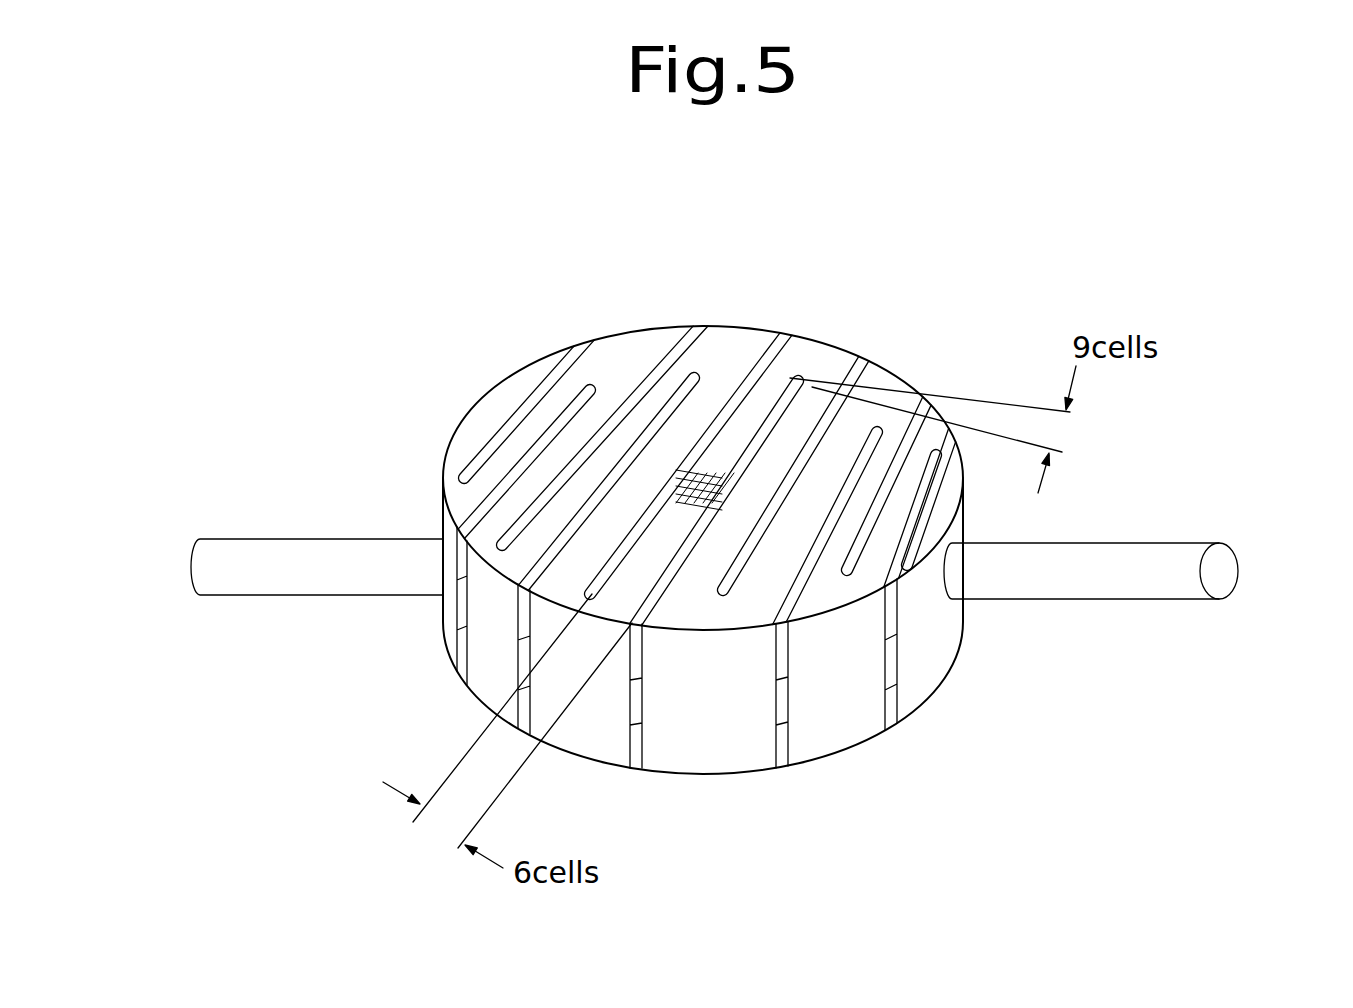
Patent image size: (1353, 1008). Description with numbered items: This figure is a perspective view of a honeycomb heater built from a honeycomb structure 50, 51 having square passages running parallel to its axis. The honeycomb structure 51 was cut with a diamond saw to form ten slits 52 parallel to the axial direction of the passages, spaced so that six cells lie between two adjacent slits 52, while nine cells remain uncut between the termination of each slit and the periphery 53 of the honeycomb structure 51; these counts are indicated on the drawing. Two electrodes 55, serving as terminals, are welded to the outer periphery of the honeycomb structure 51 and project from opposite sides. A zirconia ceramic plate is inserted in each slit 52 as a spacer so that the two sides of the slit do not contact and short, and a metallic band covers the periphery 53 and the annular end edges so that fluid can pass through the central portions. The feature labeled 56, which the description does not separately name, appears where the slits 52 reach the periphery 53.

The honeycomb structure 50 is at (691, 497).
The honeycomb structure 51 is at (612, 358).
The slits 52 is at (687, 570).
The periphery 53 is at (947, 637).
The electrodes 55 is at (288, 553).
The slit openings on side surface 56 is at (457, 618).